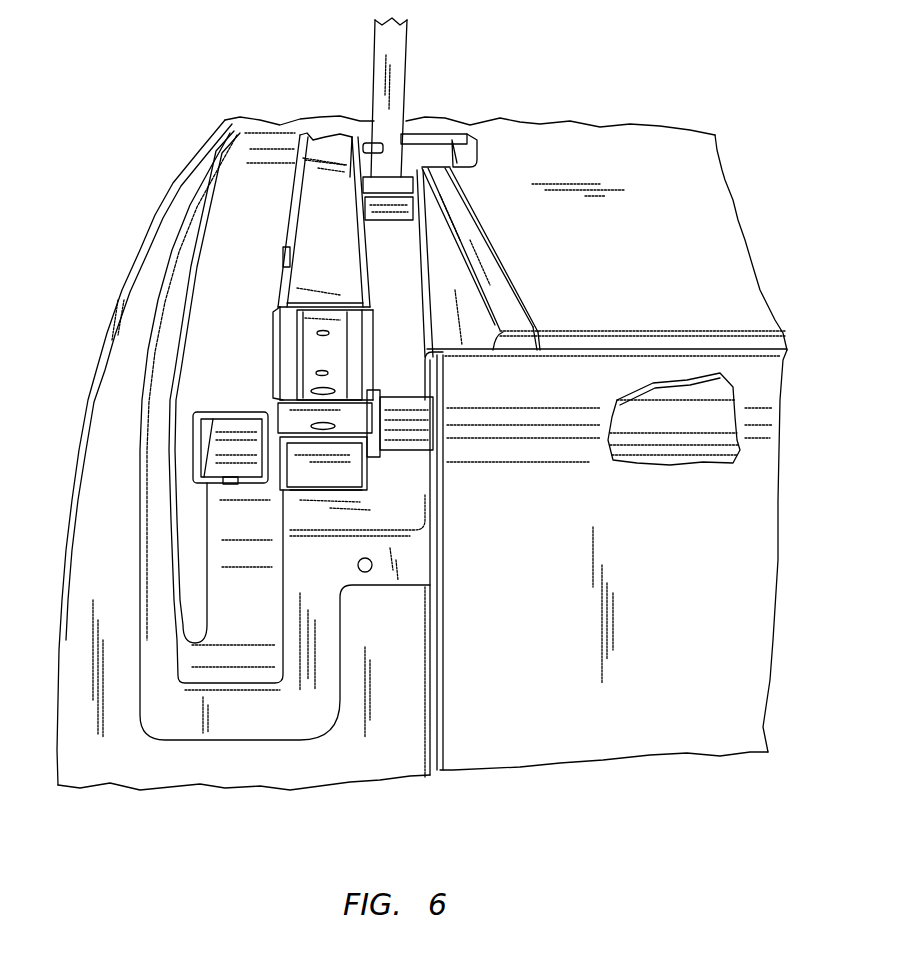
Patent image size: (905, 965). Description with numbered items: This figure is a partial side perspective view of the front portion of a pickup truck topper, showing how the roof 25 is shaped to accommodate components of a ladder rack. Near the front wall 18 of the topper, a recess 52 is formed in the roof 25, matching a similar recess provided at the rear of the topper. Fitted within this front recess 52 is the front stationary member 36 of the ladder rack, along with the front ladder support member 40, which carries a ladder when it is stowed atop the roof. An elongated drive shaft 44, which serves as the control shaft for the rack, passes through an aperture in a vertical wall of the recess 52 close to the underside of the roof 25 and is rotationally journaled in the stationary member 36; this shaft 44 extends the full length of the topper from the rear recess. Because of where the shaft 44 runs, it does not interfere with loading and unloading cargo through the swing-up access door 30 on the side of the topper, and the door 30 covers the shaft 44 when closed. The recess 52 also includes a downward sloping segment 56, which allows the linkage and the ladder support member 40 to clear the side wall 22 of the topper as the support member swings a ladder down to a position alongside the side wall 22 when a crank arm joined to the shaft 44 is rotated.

The front wall 18 is at (92, 378).
The side wall 22 is at (365, 766).
The roof 25 is at (642, 274).
The swing-up access door 30 is at (651, 556).
The front stationary member 36 is at (358, 418).
The front ladder support member 40 is at (307, 185).
The drive shaft 44 is at (410, 443).
The recess 52 is at (423, 279).
The downward sloping segment 56 is at (251, 603).